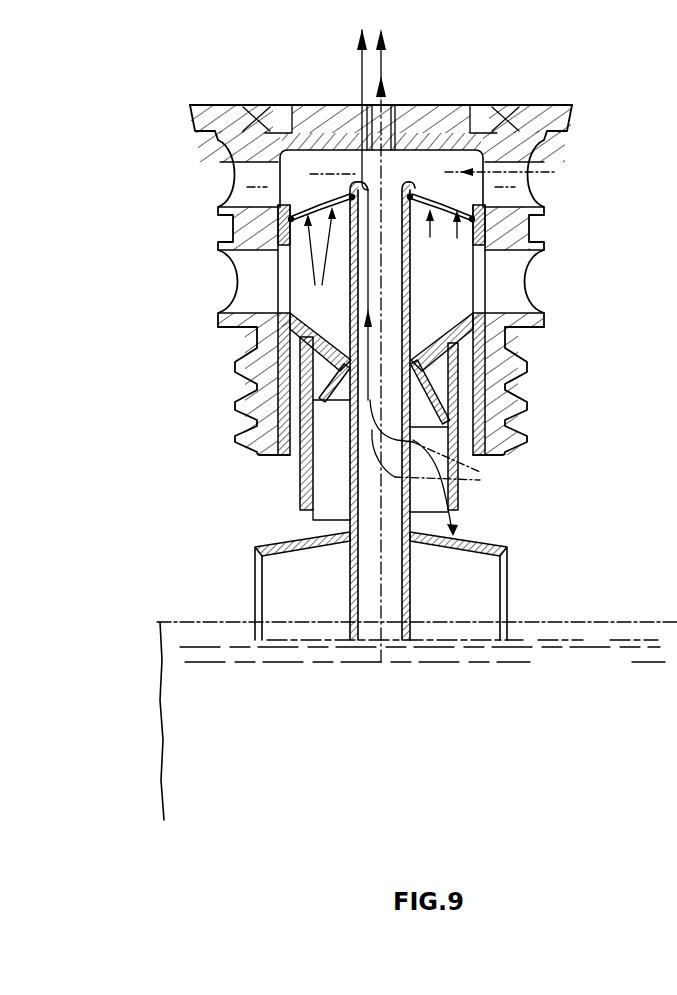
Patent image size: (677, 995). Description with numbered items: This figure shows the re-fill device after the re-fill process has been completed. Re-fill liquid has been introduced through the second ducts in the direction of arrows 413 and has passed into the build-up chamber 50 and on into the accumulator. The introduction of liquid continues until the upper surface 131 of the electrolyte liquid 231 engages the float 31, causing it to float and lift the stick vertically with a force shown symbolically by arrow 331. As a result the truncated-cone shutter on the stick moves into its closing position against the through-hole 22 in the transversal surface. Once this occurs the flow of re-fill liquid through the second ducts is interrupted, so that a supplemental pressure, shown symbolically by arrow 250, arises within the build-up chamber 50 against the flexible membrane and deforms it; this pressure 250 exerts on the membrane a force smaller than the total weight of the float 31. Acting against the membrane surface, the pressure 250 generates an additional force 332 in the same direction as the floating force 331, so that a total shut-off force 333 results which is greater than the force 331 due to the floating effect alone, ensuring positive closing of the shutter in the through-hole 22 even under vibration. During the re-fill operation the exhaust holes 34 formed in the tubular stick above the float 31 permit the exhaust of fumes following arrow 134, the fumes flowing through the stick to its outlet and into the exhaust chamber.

The through-hole 22 is at (414, 362).
The float 31 is at (468, 577).
The exhaust holes 34 is at (441, 468).
The build-up chamber 50 is at (487, 243).
The upper surface of the electrolyte liquid 131 is at (530, 638).
The fume exhaust arrow 134 is at (127, 177).
The electrolyte liquid 231 is at (583, 692).
The supplemental pressure arrow 250 is at (426, 240).
The floating force arrow 331 is at (383, 100).
The additional force arrow 332 is at (383, 63).
The total shut-off force arrow 333 is at (353, 80).
The re-fill liquid flow arrows 413 is at (462, 306).